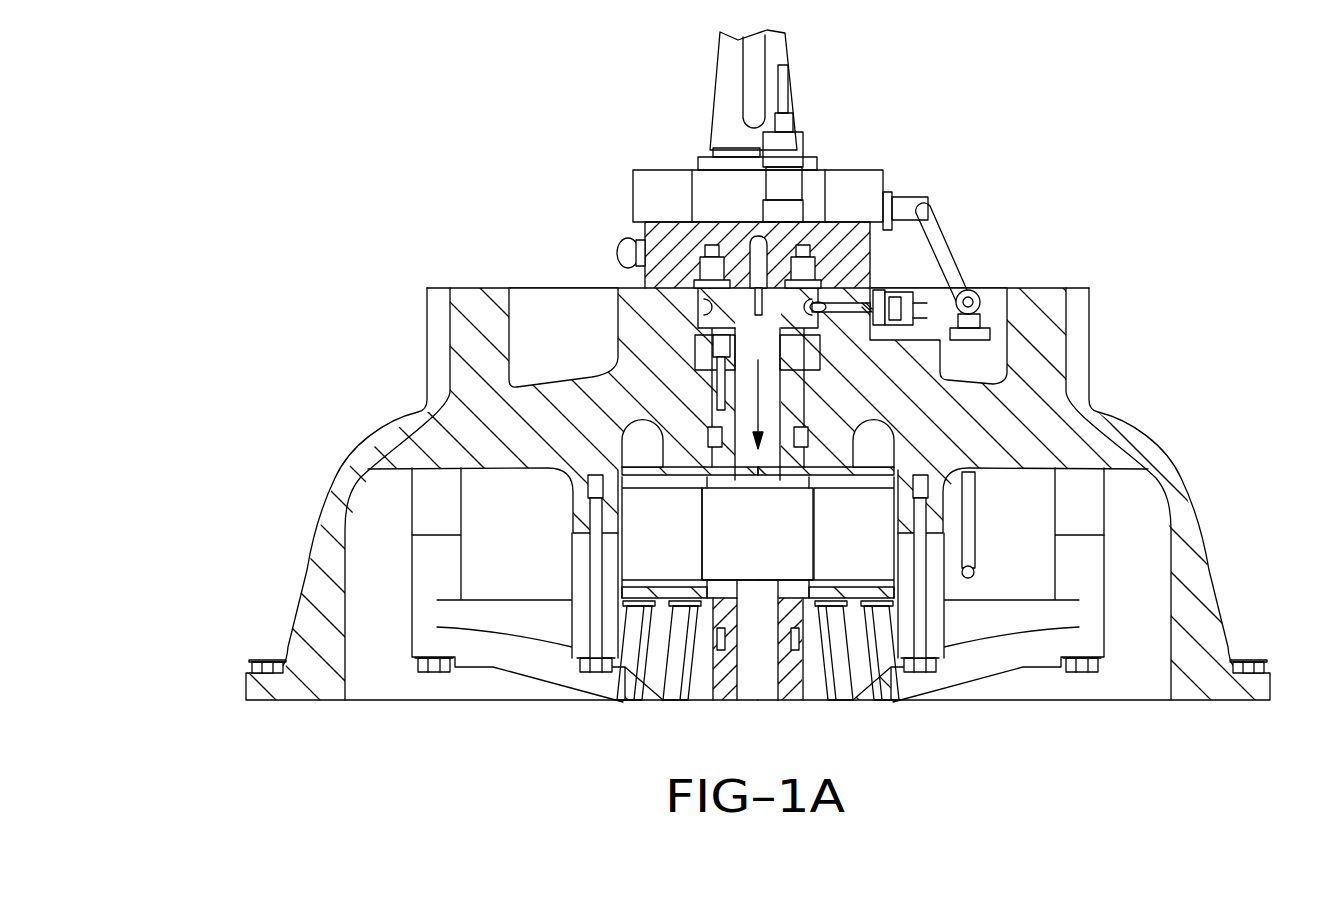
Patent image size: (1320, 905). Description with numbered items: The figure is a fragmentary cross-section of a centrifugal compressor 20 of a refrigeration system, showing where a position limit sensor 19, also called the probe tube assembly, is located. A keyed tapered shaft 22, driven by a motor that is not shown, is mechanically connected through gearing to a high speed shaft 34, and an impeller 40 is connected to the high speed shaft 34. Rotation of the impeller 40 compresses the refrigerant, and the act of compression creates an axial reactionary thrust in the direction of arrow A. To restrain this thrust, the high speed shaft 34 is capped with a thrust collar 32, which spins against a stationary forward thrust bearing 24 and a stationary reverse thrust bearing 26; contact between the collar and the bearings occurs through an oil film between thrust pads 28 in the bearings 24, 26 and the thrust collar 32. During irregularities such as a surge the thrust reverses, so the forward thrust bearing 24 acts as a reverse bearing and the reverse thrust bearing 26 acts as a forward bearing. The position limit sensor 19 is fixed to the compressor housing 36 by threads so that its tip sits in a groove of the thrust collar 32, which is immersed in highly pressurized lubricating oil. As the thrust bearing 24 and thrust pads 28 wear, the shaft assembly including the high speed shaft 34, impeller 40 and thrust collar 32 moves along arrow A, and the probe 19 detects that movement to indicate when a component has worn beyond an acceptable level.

The position limit sensor 19 is at (882, 298).
The compressor 20 is at (522, 178).
The keyed tapered shaft 22 is at (750, 70).
The forward thrust bearing 24 is at (705, 348).
The reverse thrust bearing 26 is at (838, 237).
The thrust pads 28 is at (712, 255).
The thrust collar 32 is at (718, 298).
The high speed shaft 34 is at (752, 638).
The compressor housing 36 is at (1147, 447).
The impeller 40 is at (848, 680).